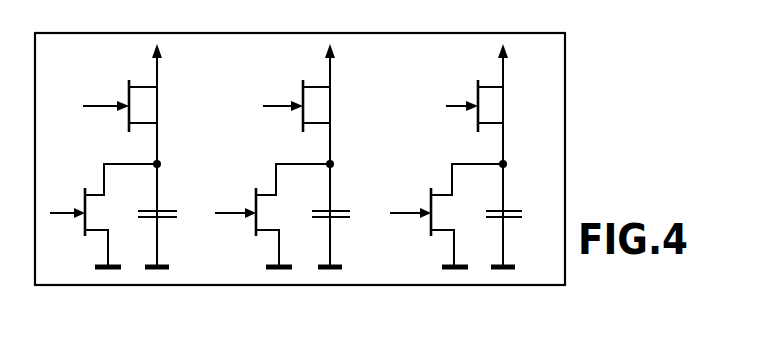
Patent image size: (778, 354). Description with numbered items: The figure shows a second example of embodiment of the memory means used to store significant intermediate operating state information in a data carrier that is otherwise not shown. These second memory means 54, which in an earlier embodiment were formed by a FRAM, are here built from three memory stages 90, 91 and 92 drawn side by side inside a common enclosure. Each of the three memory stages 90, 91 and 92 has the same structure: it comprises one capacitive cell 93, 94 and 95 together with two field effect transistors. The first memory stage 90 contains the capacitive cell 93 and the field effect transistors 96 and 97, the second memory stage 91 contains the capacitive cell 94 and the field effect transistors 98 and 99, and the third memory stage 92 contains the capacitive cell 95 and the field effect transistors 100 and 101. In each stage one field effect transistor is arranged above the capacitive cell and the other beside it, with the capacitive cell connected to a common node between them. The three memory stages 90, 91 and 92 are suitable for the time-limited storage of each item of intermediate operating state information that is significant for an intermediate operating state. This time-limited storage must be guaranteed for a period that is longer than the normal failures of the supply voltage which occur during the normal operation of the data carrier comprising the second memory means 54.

The second memory means 54 is at (574, 109).
The memory stage 90 is at (191, 130).
The memory stage 91 is at (359, 128).
The memory stage 92 is at (523, 119).
The capacitive cell 93 is at (161, 210).
The capacitive cell 94 is at (334, 210).
The capacitive cell 95 is at (506, 210).
The field effect transistor 96 is at (129, 112).
The field effect transistor 97 is at (85, 221).
The field effect transistor 98 is at (303, 112).
The field effect transistor 99 is at (256, 221).
The field effect transistor 100 is at (478, 112).
The field effect transistor 101 is at (431, 221).